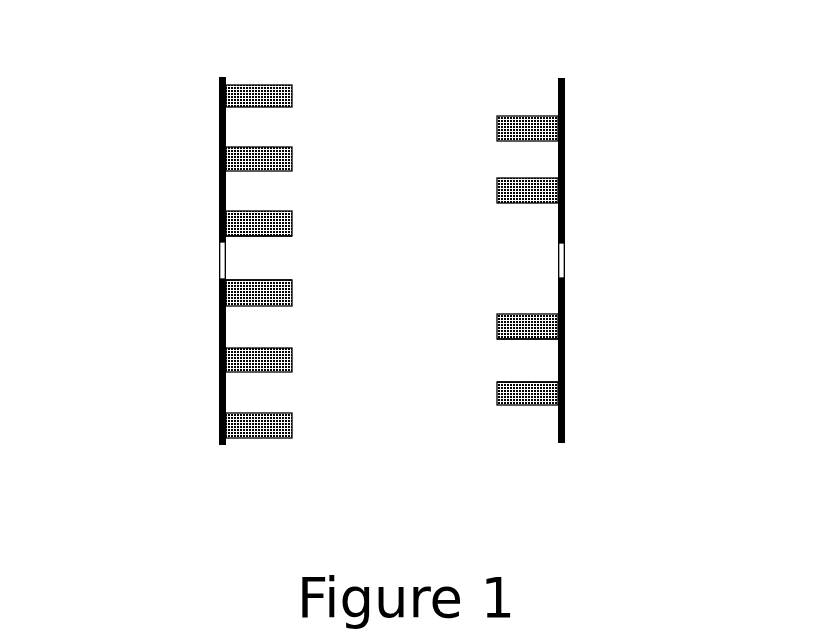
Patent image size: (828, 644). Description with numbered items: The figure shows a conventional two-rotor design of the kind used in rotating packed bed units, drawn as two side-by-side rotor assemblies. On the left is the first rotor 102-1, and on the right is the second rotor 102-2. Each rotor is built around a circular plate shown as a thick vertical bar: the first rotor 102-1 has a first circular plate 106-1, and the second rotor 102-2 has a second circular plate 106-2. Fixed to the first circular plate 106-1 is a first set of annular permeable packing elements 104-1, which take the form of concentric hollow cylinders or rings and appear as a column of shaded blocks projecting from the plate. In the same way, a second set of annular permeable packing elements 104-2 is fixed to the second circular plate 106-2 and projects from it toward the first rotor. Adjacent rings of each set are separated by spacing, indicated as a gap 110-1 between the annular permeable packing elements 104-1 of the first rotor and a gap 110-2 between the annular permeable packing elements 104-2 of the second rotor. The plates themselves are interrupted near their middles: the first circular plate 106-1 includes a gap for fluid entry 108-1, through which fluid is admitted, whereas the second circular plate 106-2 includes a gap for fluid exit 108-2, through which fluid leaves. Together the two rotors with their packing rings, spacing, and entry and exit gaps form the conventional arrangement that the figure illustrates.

The first rotor 102-1 is at (234, 65).
The first set of annular permeable packing elements 104-1 is at (237, 96).
The first circular plate 106-1 is at (219, 185).
The gap for fluid entry 108-1 is at (219, 258).
The gap between annular permeable packing elements 110-1 is at (250, 328).
The second rotor 102-2 is at (557, 73).
The second set of annular permeable packing elements 104-2 is at (542, 192).
The second circular plate 106-2 is at (563, 227).
The gap for fluid exit 108-2 is at (564, 263).
The gap between annular permeable packing elements 110-2 is at (538, 355).